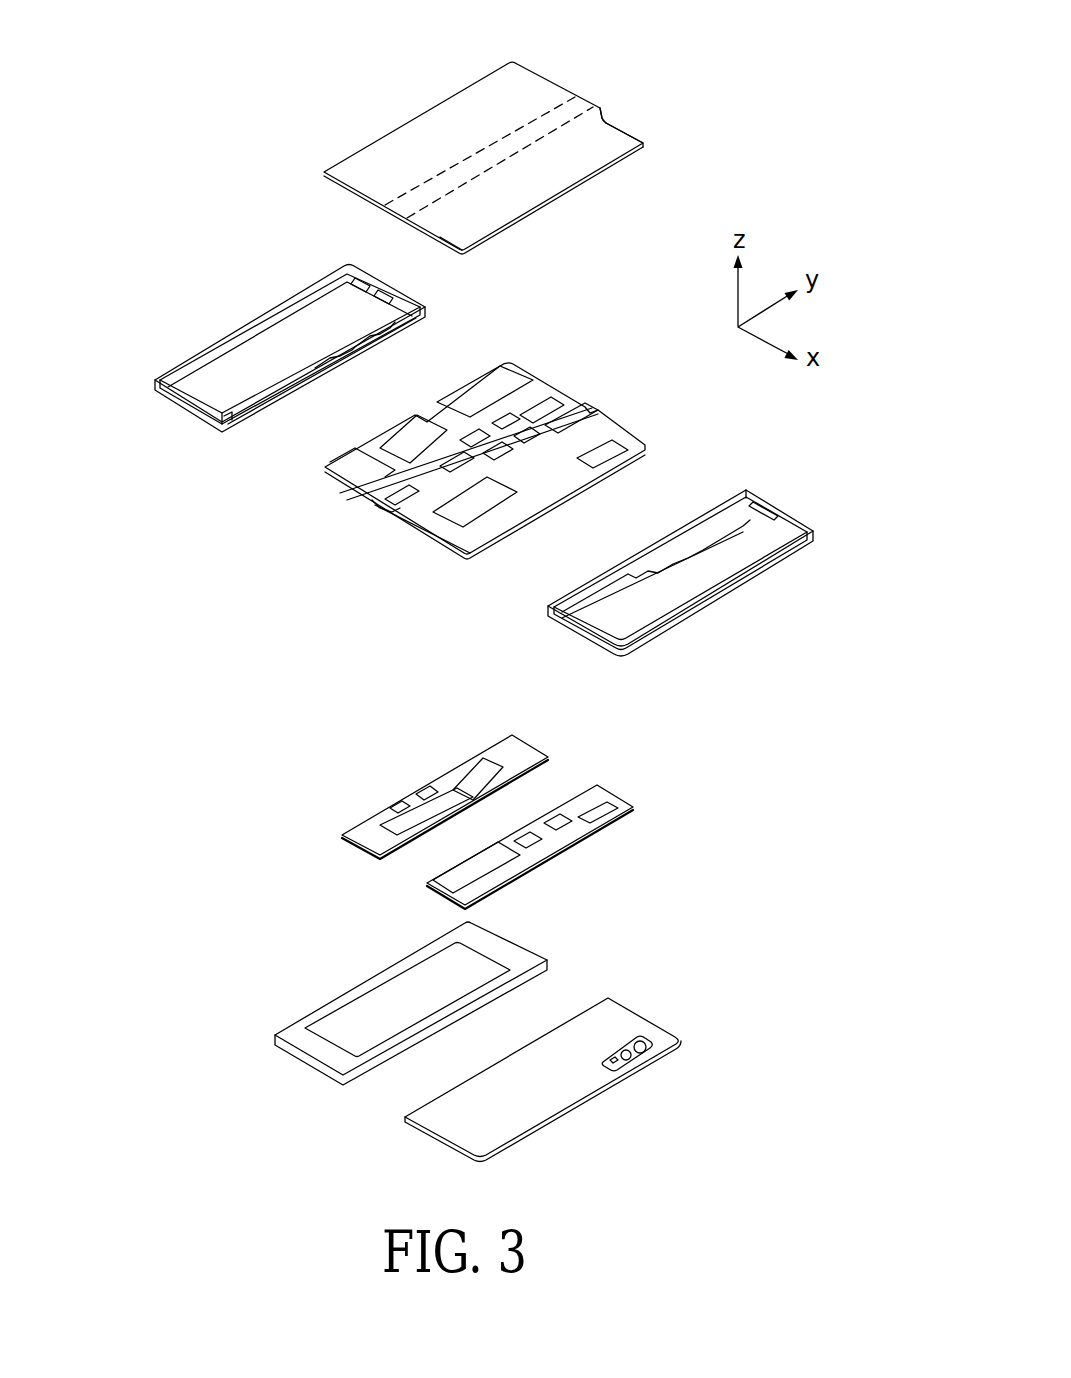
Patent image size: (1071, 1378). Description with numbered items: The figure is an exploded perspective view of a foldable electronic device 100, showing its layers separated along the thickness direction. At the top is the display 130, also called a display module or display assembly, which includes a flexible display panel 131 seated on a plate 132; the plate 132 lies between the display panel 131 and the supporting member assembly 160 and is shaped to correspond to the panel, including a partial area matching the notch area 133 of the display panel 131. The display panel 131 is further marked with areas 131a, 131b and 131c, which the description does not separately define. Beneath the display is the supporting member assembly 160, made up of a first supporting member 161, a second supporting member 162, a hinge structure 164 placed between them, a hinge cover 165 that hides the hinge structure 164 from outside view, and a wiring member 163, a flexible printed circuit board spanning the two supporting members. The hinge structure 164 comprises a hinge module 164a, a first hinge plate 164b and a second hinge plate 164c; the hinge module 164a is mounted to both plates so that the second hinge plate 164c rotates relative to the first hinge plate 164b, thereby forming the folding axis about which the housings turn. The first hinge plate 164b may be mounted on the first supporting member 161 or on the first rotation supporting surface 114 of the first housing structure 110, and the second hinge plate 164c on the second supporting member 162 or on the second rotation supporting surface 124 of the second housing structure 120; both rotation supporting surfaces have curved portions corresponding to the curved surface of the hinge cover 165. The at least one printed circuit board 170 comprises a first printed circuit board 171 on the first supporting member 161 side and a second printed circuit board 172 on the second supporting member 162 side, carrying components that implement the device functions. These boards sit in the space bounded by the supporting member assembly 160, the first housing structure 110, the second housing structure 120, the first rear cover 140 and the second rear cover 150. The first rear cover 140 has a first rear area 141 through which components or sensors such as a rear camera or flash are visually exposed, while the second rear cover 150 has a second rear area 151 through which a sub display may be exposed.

The electronic device 100 is at (188, 62).
The first housing structure 110 is at (785, 497).
The first rotation supporting surface 114 is at (703, 518).
The second housing structure 120 is at (242, 312).
The second rotation supporting surface 124 is at (387, 335).
The display 130 is at (340, 133).
The display panel 131 is at (437, 118).
The first display region 131a is at (628, 143).
The second display region 131b is at (528, 77).
The intermediate display region 131c is at (592, 92).
The plate 132 is at (510, 188).
The notch area 133 is at (615, 118).
The first rear cover 140 is at (550, 1102).
The first rear area 141 is at (640, 1058).
The second rear cover 150 is at (297, 1032).
The second rear area 151 is at (367, 988).
The supporting member assembly 160 is at (628, 423).
The first supporting member 161 is at (437, 528).
The second supporting member 162 is at (348, 480).
The wiring member 163 is at (506, 428).
The hinge structure 164 is at (148, 568).
The hinge module 164a is at (390, 487).
The first hinge plate 164b is at (570, 407).
The second hinge plate 164c is at (527, 405).
The hinge cover 165 is at (380, 508).
The printed circuit board 170 is at (672, 762).
The first printed circuit board 171 is at (600, 795).
The second printed circuit board 172 is at (520, 752).